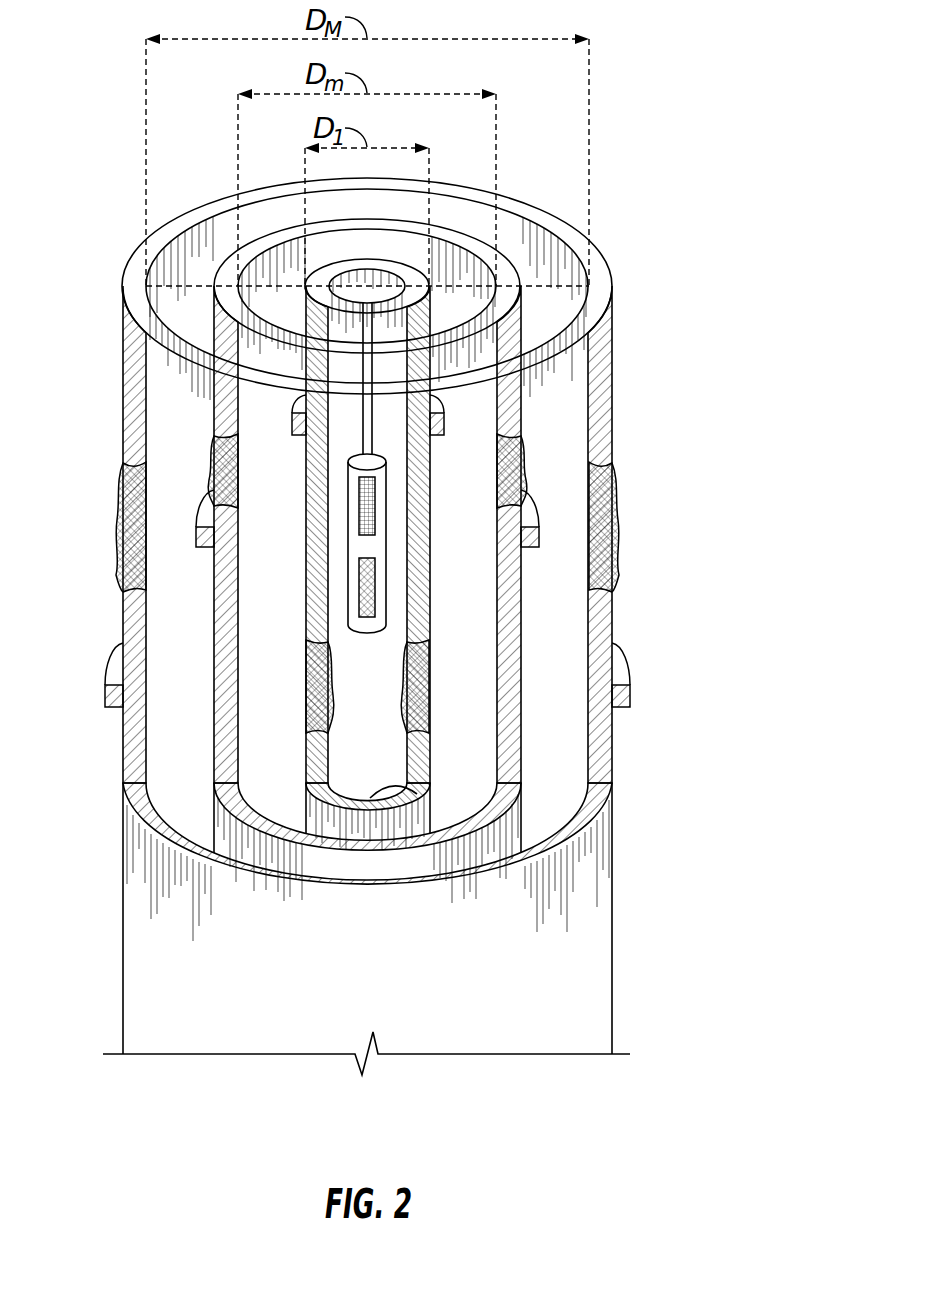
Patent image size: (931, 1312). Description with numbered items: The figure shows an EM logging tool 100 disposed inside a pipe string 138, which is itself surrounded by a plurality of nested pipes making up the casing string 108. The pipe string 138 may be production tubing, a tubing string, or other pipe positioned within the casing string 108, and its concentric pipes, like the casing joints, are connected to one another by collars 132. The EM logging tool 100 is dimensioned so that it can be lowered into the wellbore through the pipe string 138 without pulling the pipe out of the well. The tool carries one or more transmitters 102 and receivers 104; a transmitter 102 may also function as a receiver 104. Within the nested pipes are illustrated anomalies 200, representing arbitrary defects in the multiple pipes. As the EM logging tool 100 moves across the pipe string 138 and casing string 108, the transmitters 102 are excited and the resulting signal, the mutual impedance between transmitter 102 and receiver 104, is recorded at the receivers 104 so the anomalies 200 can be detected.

The EM logging tool 100 is at (378, 545).
The transmitter 102 is at (367, 497).
The receiver 104 is at (367, 595).
The casing string 108 is at (713, 602).
The collar 132 is at (207, 537).
The pipe string 138 is at (403, 787).
The anomalies 200 is at (224, 452).